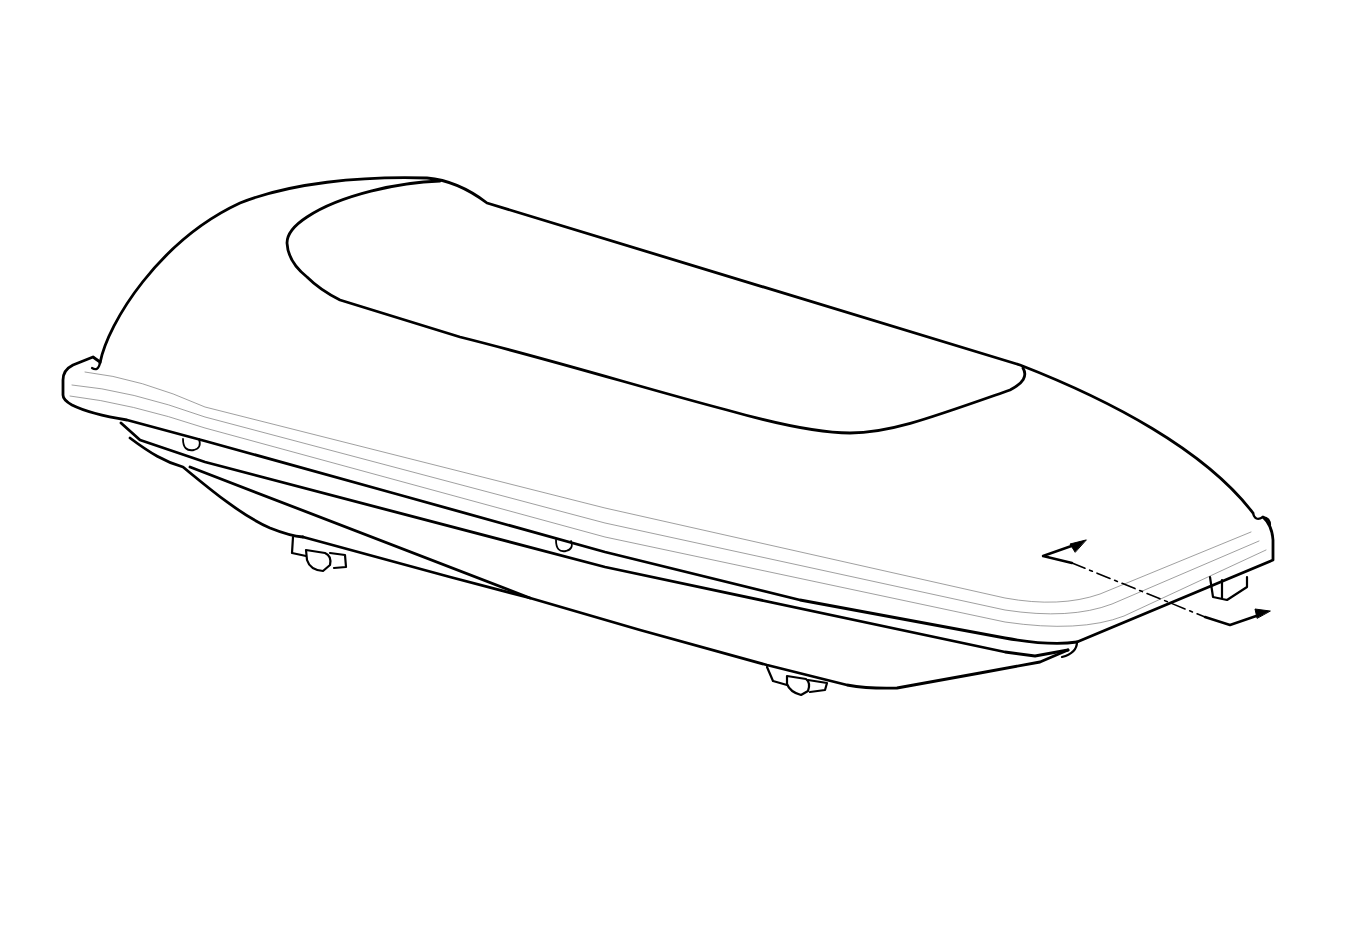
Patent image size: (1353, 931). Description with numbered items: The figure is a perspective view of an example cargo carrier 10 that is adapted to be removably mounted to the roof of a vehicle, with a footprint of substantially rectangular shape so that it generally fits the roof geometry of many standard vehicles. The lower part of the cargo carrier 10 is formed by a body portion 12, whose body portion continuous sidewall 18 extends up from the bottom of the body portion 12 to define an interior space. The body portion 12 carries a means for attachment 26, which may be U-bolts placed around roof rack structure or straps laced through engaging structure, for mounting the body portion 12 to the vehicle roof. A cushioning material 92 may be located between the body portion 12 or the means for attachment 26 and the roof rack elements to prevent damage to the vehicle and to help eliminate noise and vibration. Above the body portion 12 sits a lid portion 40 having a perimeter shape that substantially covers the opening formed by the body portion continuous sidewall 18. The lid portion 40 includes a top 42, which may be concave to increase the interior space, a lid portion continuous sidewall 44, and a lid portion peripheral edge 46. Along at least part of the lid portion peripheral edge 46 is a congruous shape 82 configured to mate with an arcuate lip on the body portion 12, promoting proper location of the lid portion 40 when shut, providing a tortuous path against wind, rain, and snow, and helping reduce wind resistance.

The cargo carrier 10 is at (1083, 165).
The body portion 12 is at (450, 578).
The body portion continuous sidewall 18 is at (214, 493).
The means for attachment 26 is at (293, 544).
The lid portion 40 is at (805, 282).
The top 42 is at (616, 258).
The lid portion continuous sidewall 44 is at (128, 293).
The lid portion peripheral edge 46 is at (1274, 561).
The congruous shape 82 is at (1264, 519).
The cushioning material 92 is at (321, 568).